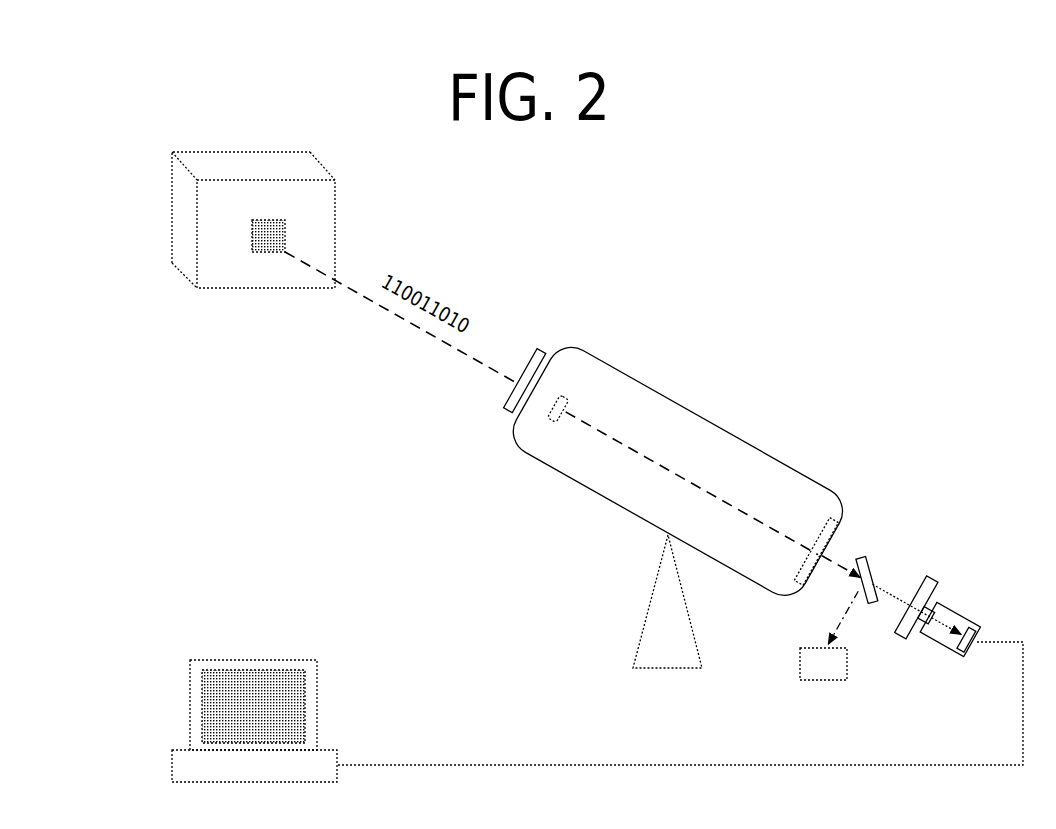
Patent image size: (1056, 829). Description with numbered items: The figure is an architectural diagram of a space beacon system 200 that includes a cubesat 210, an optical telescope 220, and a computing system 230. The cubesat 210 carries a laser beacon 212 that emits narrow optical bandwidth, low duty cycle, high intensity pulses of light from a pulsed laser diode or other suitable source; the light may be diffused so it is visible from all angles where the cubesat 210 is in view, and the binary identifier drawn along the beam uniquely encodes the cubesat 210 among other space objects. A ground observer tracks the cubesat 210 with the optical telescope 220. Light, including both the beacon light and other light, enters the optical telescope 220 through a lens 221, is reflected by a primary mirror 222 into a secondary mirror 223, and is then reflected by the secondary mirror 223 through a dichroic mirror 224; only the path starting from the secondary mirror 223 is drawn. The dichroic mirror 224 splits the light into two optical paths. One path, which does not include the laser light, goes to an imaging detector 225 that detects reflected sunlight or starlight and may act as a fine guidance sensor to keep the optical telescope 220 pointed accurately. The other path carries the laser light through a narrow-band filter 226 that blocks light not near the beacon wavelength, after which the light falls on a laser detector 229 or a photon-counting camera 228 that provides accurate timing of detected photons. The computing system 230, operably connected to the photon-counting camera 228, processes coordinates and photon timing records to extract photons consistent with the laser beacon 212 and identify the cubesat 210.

The space beacon system 200 is at (120, 120).
The cubesat 210 is at (172, 222).
The laser beacon 212 is at (268, 252).
The optical telescope 220 is at (710, 417).
The lens 221 is at (540, 355).
The primary mirror 222 is at (846, 522).
The secondary mirror 223 is at (553, 420).
The dichroic mirror 224 is at (870, 560).
The imaging detector 225 is at (798, 660).
The narrow-band filter 226 is at (938, 578).
The photon-counting camera 228 is at (962, 612).
The laser detector 229 is at (962, 652).
The computing system 230 is at (283, 660).